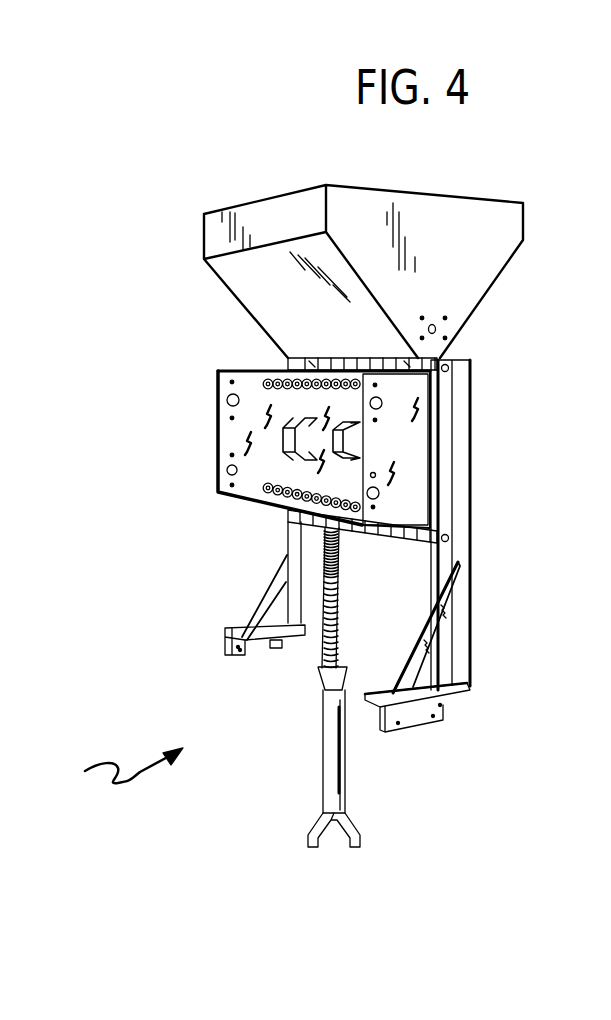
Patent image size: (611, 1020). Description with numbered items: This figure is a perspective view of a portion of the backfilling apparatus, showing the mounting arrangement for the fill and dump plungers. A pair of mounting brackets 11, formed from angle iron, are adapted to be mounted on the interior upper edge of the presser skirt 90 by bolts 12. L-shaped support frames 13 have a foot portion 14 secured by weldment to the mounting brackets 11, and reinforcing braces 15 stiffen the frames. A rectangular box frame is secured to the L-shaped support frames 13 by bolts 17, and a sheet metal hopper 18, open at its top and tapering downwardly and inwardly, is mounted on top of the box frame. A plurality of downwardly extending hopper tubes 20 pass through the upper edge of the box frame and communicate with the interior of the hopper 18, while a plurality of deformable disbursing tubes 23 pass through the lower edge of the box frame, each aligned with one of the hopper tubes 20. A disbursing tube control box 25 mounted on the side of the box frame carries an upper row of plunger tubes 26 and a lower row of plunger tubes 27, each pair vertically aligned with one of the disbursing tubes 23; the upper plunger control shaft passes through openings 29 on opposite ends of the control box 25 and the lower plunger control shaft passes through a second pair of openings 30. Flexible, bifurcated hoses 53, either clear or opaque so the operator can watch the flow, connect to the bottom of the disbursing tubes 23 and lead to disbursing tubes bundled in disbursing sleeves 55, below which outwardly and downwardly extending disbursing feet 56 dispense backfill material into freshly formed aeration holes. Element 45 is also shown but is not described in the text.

The mounting bracket 11 is at (237, 647).
The bolts 12 is at (240, 650).
The L-shaped support frame 13 is at (288, 525).
The foot portion 14 is at (240, 630).
The reinforcing brace 15 is at (275, 590).
The bolts 17 is at (473, 370).
The hopper 18 is at (450, 230).
The hopper tubes 20 is at (380, 358).
The disbursing tubes 23 is at (382, 537).
The disbursing tube control box 25 is at (407, 465).
The upper plunger tubes 26 is at (277, 388).
The lower plunger tubes 27 is at (270, 490).
The openings 29 is at (382, 402).
The openings 30 is at (380, 493).
The fastener 45 is at (241, 682).
The flexible bifurcated hoses 53 is at (318, 667).
The disbursing sleeve 55 is at (343, 730).
The disbursing feet 56 is at (362, 847).
The presser skirt 90 is at (112, 770).